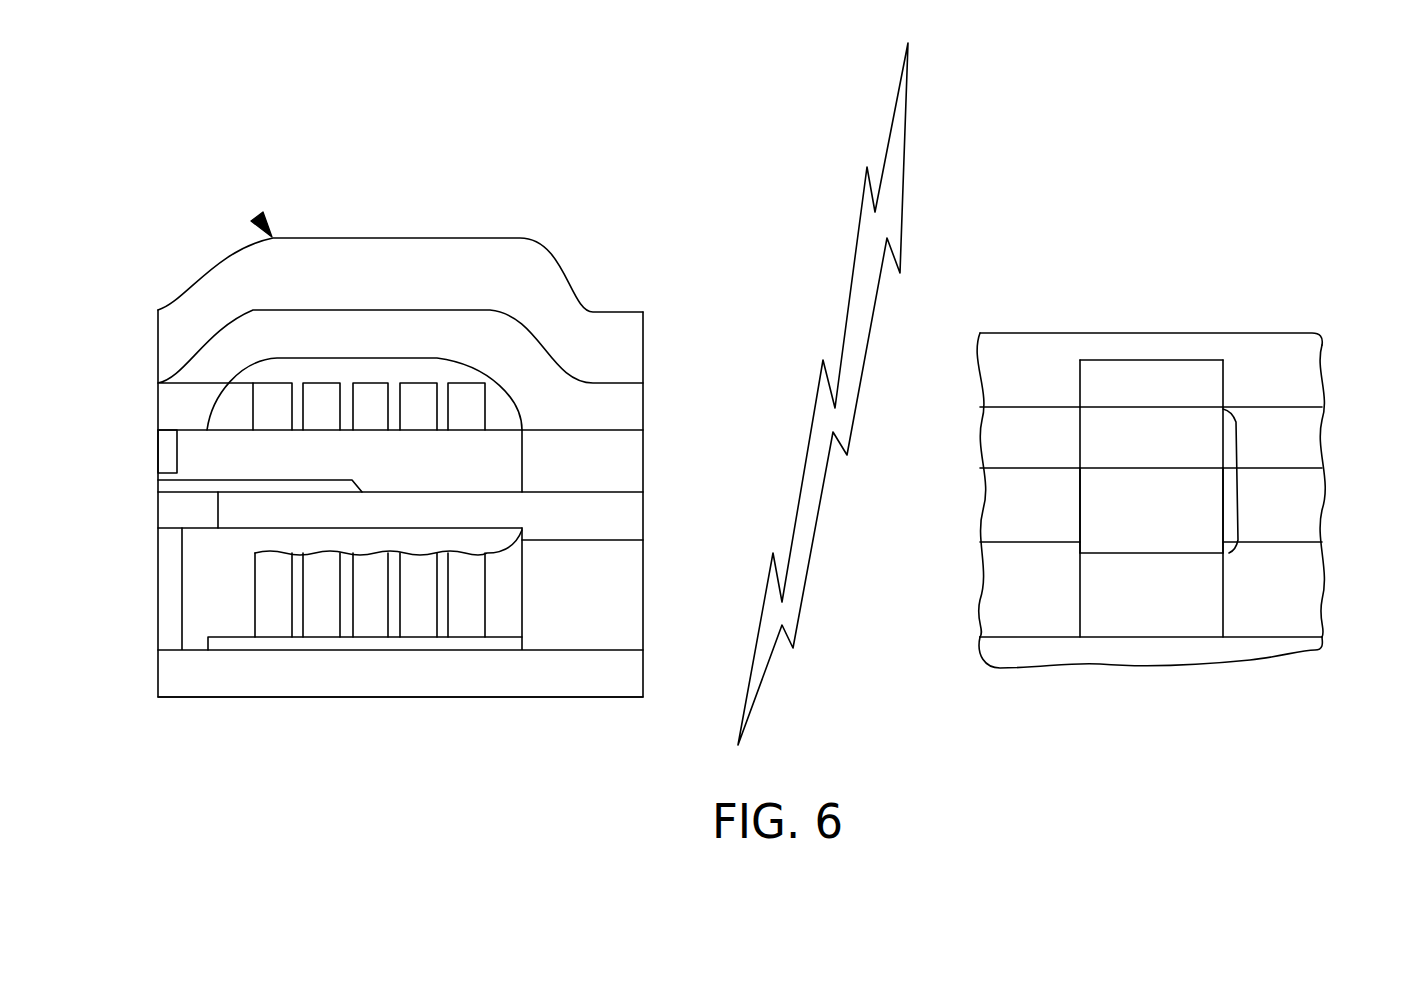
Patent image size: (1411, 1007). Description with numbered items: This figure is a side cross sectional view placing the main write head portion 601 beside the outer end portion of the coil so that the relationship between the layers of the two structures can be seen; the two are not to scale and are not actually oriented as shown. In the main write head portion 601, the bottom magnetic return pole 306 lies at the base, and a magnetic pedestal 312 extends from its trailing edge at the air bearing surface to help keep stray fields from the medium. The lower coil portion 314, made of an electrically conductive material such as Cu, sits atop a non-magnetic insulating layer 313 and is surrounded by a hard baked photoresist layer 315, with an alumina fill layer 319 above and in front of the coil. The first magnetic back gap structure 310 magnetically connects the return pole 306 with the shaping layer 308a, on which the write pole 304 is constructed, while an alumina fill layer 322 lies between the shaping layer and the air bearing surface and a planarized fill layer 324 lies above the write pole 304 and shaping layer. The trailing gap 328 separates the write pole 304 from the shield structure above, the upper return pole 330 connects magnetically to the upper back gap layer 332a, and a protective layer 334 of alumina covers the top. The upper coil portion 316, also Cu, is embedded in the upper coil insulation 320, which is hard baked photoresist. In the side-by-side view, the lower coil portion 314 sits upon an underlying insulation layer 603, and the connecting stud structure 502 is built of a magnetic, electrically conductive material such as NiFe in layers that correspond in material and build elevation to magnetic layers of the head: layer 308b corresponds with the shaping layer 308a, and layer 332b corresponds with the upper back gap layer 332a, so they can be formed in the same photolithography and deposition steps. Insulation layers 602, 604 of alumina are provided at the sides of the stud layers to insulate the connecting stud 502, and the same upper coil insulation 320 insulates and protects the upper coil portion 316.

The main write head portion 601 is at (262, 218).
The second (upper) coil portion 316 is at (270, 395).
The upper coil insulation 320 is at (497, 400).
The protective layer 334 is at (177, 329).
The second (upper) return pole 330 is at (172, 397).
The trailing gap 328 is at (167, 447).
The write pole 304 is at (165, 487).
The alumina fill layer 322 is at (177, 508).
The planarized fill layer 324 is at (379, 452).
The upper back gap layer 332a is at (621, 463).
The shaping layer 308a is at (460, 510).
The magnetic pedestal 312 is at (167, 581).
The alumina fill layer 319 is at (267, 543).
The first magnetic back gap structure 310 is at (600, 590).
The hard baked photoresist layer 315 is at (503, 613).
The first (lower) coil portion 314 is at (273, 625).
The non-magnetic insulating layer 313 is at (242, 644).
The first (bottom) magnetic return pole 306 is at (583, 677).
The insulation layer 604 is at (1013, 438).
The insulation layer 602 is at (1007, 505).
The underlying insulation layer 603 is at (1097, 655).
The stud layer corresponding to upper back gap 332b is at (1190, 440).
The stud layer corresponding to shaping layer 308b is at (1190, 510).
The connecting stud structure 502 is at (1247, 420).